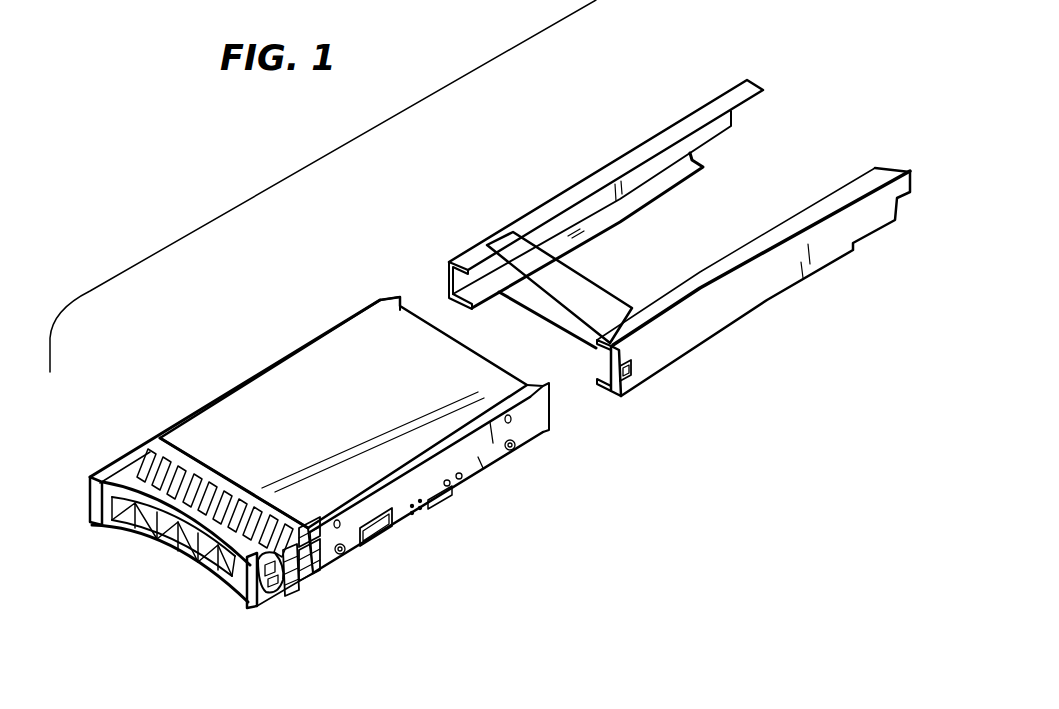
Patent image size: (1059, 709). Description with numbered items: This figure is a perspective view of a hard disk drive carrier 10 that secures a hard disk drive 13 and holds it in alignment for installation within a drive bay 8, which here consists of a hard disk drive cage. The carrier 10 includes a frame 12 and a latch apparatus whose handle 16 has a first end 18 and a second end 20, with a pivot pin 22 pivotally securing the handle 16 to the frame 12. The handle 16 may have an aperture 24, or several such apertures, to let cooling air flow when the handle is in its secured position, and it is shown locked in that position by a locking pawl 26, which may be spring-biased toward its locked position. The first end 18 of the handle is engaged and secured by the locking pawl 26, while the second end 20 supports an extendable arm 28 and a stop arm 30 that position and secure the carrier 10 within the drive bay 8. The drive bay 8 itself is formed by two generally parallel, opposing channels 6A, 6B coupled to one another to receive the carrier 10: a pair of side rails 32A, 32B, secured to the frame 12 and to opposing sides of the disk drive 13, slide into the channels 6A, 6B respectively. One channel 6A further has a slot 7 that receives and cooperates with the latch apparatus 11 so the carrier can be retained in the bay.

The drive bay 8 is at (517, 155).
The channel 6A is at (710, 318).
The channel 6B is at (447, 288).
The slot 7 is at (637, 383).
The hard disk drive carrier 10 is at (192, 373).
The latch apparatus 11 is at (273, 620).
The frame 12 is at (112, 473).
The hard disk drive 13 is at (383, 420).
The handle 16 is at (200, 560).
The first end 18 is at (117, 527).
The second end 20 is at (228, 588).
The pivot pin 22 is at (307, 577).
The aperture 24 is at (133, 515).
The locking pawl 26 is at (90, 494).
The extendable arm 28 is at (280, 593).
The stop arm 30 is at (247, 612).
The side rail 32A is at (477, 450).
The side rail 32B is at (293, 353).